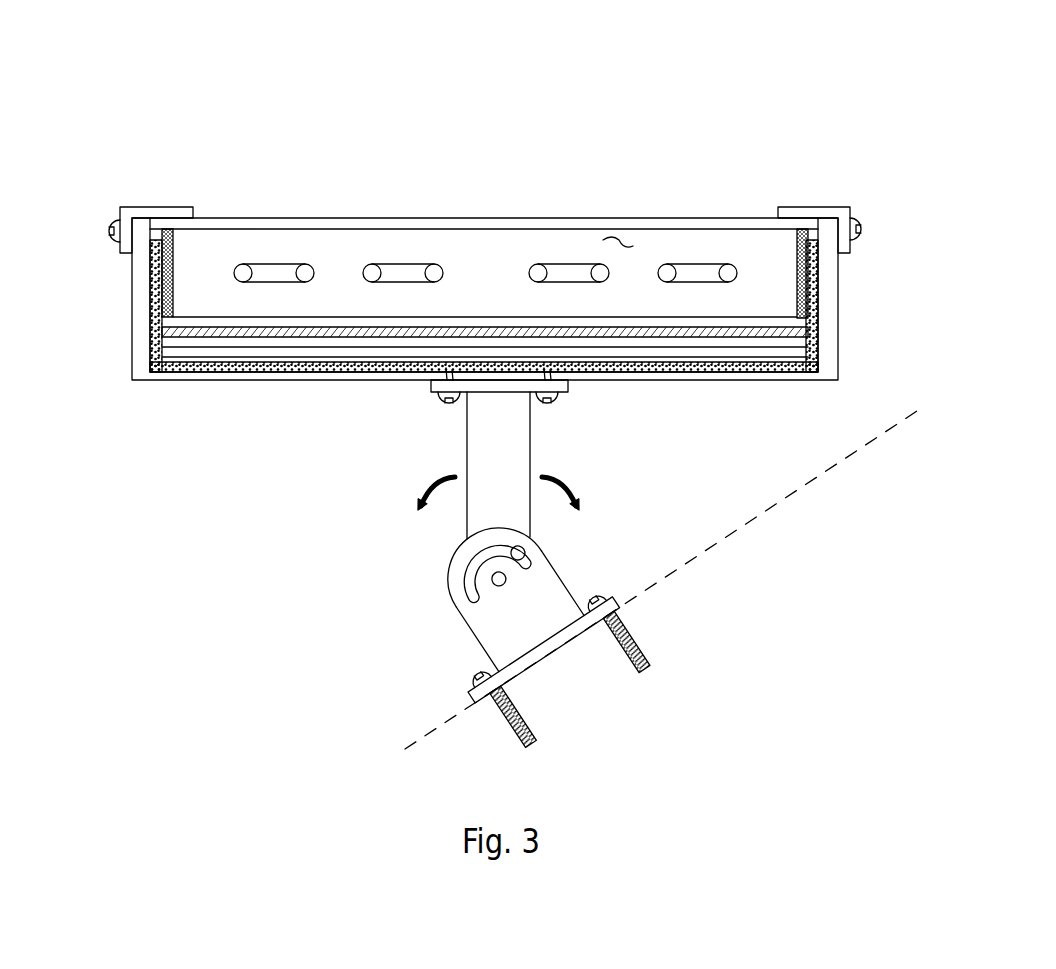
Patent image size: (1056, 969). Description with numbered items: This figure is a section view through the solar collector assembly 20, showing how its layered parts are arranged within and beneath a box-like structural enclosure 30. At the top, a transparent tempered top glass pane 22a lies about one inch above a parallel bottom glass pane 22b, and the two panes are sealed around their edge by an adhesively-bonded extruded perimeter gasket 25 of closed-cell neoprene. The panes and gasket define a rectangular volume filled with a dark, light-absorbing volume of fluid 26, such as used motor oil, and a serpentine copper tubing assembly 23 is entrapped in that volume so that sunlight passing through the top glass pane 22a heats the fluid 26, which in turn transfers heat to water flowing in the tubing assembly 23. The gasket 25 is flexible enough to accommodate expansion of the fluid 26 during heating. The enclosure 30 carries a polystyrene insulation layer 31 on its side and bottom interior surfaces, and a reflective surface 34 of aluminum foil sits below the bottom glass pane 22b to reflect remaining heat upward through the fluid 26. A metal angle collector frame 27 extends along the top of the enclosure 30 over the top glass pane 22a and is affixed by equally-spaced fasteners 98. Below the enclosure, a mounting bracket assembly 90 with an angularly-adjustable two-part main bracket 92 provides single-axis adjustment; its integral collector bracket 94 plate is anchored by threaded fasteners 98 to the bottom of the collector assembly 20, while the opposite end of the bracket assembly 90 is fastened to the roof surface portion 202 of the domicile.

The solar collector assembly 20 is at (916, 120).
The top glass pane 22a is at (702, 217).
The bottom glass pane 22b is at (280, 323).
The tubing assembly 23 is at (403, 268).
The perimeter gasket 25 is at (165, 280).
The volume of fluid 26 is at (620, 237).
The collector frame 27 is at (150, 207).
The structural enclosure 30 is at (135, 315).
The insulation layer 31 is at (172, 365).
The reflective surface 34 is at (323, 333).
The mounting bracket assembly 90 is at (414, 638).
The main bracket 92 is at (448, 568).
The collector bracket 94 is at (560, 385).
The fasteners 98 is at (108, 222).
The roof surface portion 202 is at (805, 487).